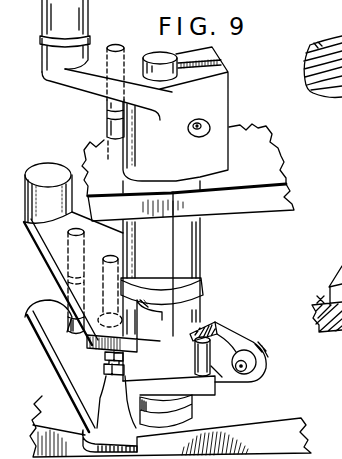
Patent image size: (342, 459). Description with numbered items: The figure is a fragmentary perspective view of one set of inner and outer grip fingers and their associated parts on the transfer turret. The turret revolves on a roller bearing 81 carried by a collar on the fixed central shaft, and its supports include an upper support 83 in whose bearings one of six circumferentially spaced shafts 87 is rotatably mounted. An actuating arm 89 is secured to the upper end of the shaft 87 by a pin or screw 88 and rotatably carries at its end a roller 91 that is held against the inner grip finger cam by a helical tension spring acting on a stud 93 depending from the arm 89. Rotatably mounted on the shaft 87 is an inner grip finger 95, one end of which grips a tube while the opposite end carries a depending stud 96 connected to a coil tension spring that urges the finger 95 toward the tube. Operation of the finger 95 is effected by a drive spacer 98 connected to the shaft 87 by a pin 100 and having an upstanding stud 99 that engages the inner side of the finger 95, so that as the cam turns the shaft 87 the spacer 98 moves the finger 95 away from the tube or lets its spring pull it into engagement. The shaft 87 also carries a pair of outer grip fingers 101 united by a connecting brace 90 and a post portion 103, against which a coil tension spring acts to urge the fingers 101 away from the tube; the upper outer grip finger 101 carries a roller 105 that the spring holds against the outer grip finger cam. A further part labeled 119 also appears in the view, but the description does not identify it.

The roller bearing 81 is at (312, 444).
The upper support 83 is at (252, 212).
The shaft 87 is at (153, 55).
The pin or screw 88 is at (207, 121).
The actuating arm 89 is at (78, 82).
The connecting brace 90 is at (113, 257).
The roller 91 is at (84, 25).
The stud 93 is at (108, 105).
The inner grip finger 95 is at (266, 360).
The depending stud 96 is at (107, 386).
The drive spacer 98 is at (214, 390).
The upstanding stud 99 is at (212, 325).
The pin 100 is at (138, 421).
The outer grip finger 101 is at (46, 318).
The post portion 103 is at (55, 372).
The roller 105 is at (50, 166).
The knob 119 is at (323, 86).